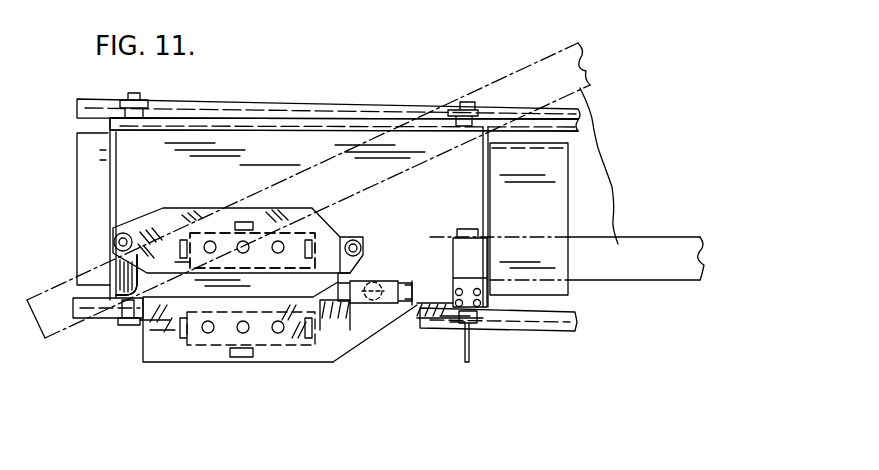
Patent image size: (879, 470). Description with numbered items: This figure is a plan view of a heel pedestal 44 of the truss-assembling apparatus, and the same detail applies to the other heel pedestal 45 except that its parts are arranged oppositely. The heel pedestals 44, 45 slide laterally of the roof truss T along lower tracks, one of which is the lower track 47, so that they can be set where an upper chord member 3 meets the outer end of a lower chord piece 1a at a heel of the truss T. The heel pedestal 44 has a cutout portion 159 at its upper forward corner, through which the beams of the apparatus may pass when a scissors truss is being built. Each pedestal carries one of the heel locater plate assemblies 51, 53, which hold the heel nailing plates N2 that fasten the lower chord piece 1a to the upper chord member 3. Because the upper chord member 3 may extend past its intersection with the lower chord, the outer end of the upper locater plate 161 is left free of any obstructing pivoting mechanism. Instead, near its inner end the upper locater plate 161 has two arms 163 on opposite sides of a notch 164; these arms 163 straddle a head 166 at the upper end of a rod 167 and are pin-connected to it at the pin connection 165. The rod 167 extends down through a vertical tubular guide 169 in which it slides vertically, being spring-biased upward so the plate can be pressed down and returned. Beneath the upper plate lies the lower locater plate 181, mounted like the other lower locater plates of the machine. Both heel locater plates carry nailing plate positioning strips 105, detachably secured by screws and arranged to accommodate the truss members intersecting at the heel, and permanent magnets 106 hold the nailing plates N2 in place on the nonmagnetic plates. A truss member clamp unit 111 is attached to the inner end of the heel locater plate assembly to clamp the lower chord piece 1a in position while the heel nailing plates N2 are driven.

The lower track 47 is at (92, 105).
The heel pedestal 44 is at (222, 122).
The heel pedestal 45 is at (344, 124).
The upper chord member 3 is at (477, 91).
The roof truss T is at (599, 166).
The cutout portion 159 is at (487, 206).
The lower chord piece 1a is at (597, 283).
The truss member clamp unit 111 is at (488, 259).
The arms 163 is at (344, 308).
The lower locater plate 181 is at (172, 207).
The rod 167 is at (376, 262).
The head 166 is at (395, 279).
The vertical tubular guide 169 is at (370, 282).
The pin connection 165 is at (412, 304).
The notch 164 is at (386, 306).
The upper locater plate 161 is at (163, 350).
The permanent magnets 106 is at (276, 322).
The nailing plate positioning strips 105 is at (243, 221).
The heel nailing plate N2 is at (218, 232).
The heel locater plate assembly 51 is at (120, 226).
The heel locater plate assembly 53 is at (126, 275).